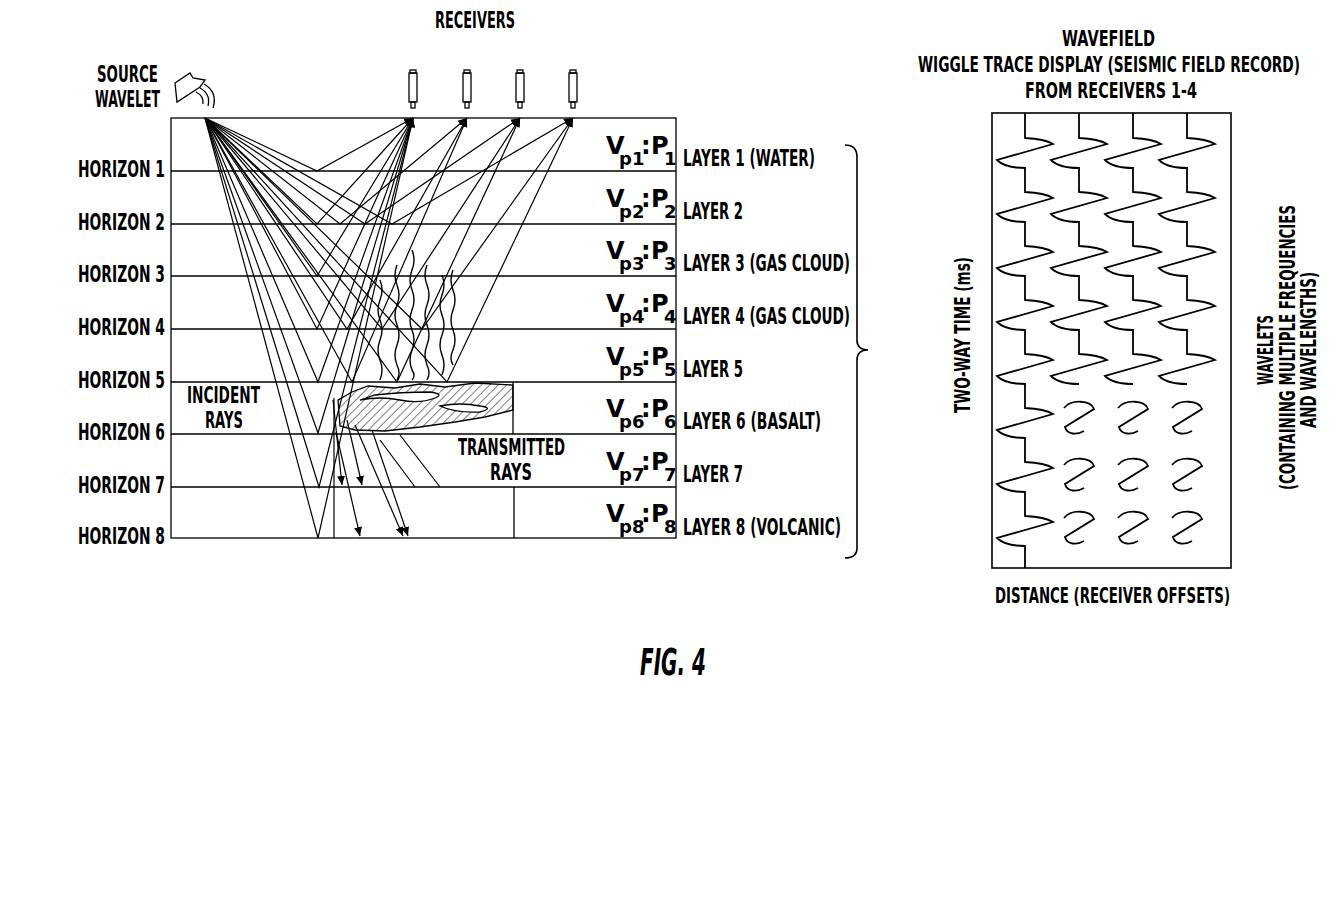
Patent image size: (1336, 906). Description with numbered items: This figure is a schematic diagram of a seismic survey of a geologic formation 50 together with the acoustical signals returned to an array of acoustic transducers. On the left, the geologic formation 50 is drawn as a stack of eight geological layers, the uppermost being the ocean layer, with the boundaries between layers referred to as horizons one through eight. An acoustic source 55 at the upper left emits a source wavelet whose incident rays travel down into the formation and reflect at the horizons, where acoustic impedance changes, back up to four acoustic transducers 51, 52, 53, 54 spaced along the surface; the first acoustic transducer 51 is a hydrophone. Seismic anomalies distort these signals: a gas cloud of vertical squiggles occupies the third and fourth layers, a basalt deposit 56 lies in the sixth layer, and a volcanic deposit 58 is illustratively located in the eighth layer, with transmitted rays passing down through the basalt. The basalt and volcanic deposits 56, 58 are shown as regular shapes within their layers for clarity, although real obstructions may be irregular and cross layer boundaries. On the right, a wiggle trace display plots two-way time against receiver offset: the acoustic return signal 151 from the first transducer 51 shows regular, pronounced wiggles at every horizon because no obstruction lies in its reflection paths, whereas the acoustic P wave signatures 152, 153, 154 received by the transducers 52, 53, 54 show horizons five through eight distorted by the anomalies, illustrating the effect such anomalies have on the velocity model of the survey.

The geologic formation 50 is at (680, 60).
The acoustic transducer 51 is at (408, 80).
The acoustic transducer 52 is at (462, 80).
The acoustic transducer 53 is at (515, 80).
The acoustic transducer 54 is at (568, 80).
The acoustic source 55 is at (186, 74).
The basalt deposit 56 is at (514, 408).
The volcanic deposit 58 is at (514, 509).
The acoustic return signal 151 is at (1008, 503).
The acoustic P wave signature 152 is at (1092, 507).
The acoustic P wave signature 153 is at (1149, 507).
The acoustic P wave signature 154 is at (1205, 507).